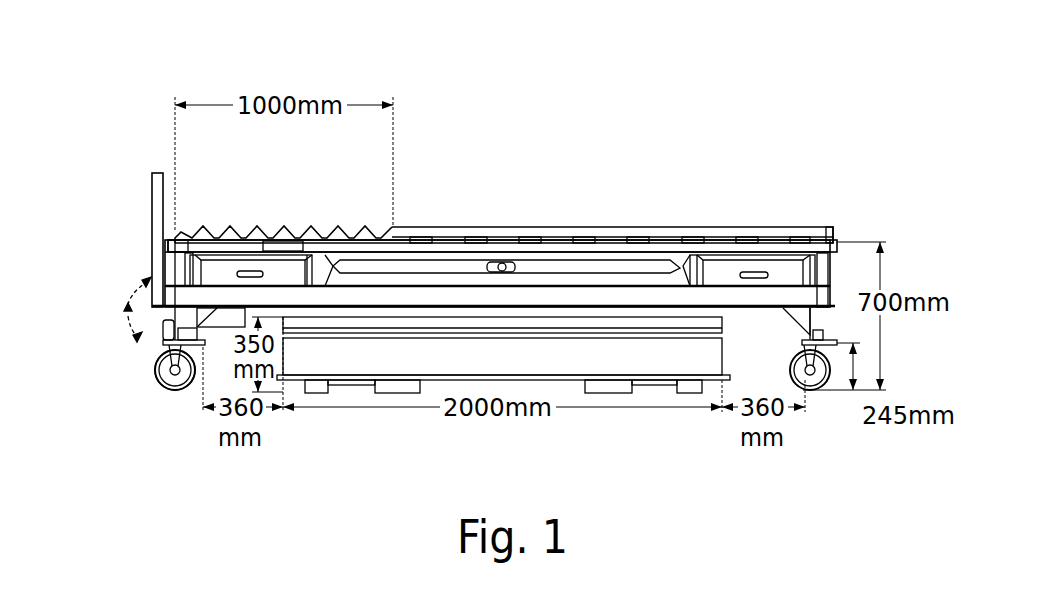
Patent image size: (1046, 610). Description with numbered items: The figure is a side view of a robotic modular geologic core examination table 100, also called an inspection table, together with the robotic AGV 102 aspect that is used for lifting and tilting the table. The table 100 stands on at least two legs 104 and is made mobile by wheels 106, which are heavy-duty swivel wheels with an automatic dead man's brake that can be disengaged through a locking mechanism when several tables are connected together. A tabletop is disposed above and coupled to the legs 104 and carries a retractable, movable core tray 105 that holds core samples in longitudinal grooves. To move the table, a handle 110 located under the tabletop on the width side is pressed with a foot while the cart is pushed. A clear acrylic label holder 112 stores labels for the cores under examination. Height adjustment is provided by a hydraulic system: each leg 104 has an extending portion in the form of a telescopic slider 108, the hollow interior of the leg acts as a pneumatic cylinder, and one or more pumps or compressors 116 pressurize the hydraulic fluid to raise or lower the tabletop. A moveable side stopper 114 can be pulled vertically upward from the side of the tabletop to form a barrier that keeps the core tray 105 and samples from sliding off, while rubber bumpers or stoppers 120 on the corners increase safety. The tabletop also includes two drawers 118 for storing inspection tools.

The geologic core examination table 100 is at (112, 105).
The robotic AGV 102 is at (503, 350).
The legs 104 is at (203, 334).
The core tray 105 is at (228, 227).
The wheels 106 is at (158, 378).
The telescopic slider 108 is at (180, 262).
The handle 110 is at (162, 348).
The label holder 112 is at (285, 239).
The side stopper 114 is at (448, 245).
The pumps or compressors 116 is at (548, 270).
The drawers 118 is at (717, 270).
The rubber bumpers or stoppers 120 is at (826, 228).